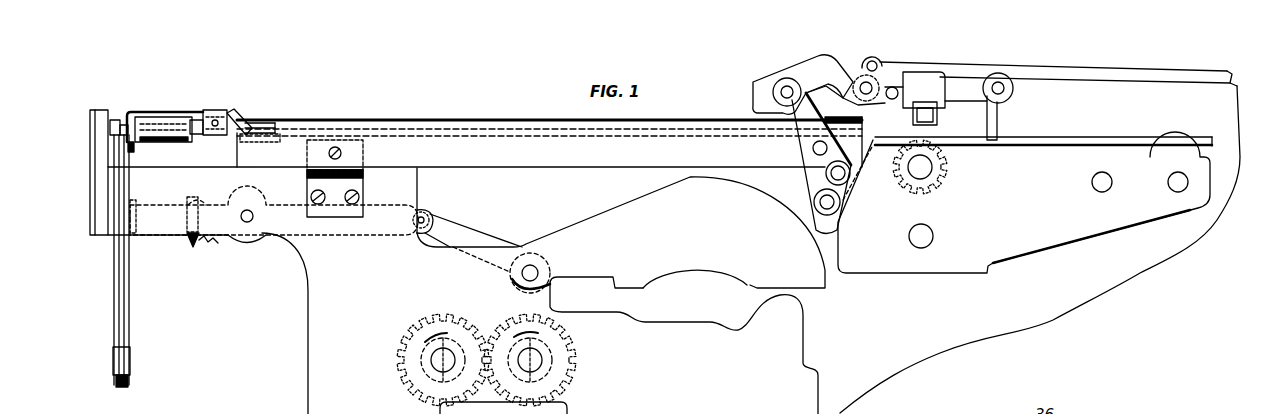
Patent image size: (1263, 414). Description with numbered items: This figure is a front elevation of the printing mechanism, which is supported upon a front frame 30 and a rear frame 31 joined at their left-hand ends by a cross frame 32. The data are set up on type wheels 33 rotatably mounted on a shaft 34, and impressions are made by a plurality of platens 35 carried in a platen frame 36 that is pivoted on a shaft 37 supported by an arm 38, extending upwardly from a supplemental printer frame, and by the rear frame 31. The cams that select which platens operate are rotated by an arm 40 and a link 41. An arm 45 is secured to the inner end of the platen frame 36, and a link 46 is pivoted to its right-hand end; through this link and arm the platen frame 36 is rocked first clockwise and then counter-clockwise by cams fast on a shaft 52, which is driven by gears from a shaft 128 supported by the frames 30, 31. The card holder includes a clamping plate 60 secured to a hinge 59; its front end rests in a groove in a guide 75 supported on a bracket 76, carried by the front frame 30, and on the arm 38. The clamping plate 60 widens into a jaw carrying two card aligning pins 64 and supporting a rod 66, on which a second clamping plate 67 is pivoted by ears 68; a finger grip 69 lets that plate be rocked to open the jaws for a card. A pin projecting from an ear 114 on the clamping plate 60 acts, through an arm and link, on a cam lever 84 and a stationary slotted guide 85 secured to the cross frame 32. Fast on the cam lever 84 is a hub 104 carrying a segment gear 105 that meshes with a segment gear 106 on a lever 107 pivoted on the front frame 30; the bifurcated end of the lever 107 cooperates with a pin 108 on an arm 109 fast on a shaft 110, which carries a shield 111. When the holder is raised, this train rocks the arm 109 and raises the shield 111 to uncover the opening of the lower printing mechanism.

The front frame 30 is at (790, 343).
The rear frame 31 is at (1133, 265).
The cross frame 32 is at (94, 110).
The type wheels 33 is at (941, 170).
The shaft 34 is at (917, 168).
The platens 35 is at (935, 121).
The platen frame 36 is at (912, 83).
The shaft 37 is at (787, 85).
The arm 38 is at (800, 102).
The arm 40 is at (879, 50).
The link 41 is at (1082, 77).
The arm 45 is at (963, 88).
The link 46 is at (999, 120).
The shaft 52 is at (540, 362).
The hinge 59 is at (168, 139).
The clamping plate 60 is at (156, 111).
The card aligning pins 64 is at (258, 143).
The rod 66 is at (214, 110).
The clamping plate 67 is at (246, 123).
The ears 68 is at (229, 113).
The finger grip 69 is at (205, 135).
The guide 75 is at (500, 160).
The bracket 76 is at (362, 187).
The cam lever 84 is at (123, 316).
The slotted guide 85 is at (117, 295).
The hub 104 is at (172, 234).
The segment gear 105 is at (190, 248).
The segment gear 106 is at (208, 203).
The lever 107 is at (243, 242).
The pin 108 is at (432, 217).
The arm 109 is at (466, 240).
The shaft 110 is at (530, 282).
The shield 111 is at (710, 257).
The ear 114 is at (133, 143).
The shaft 128 is at (433, 362).